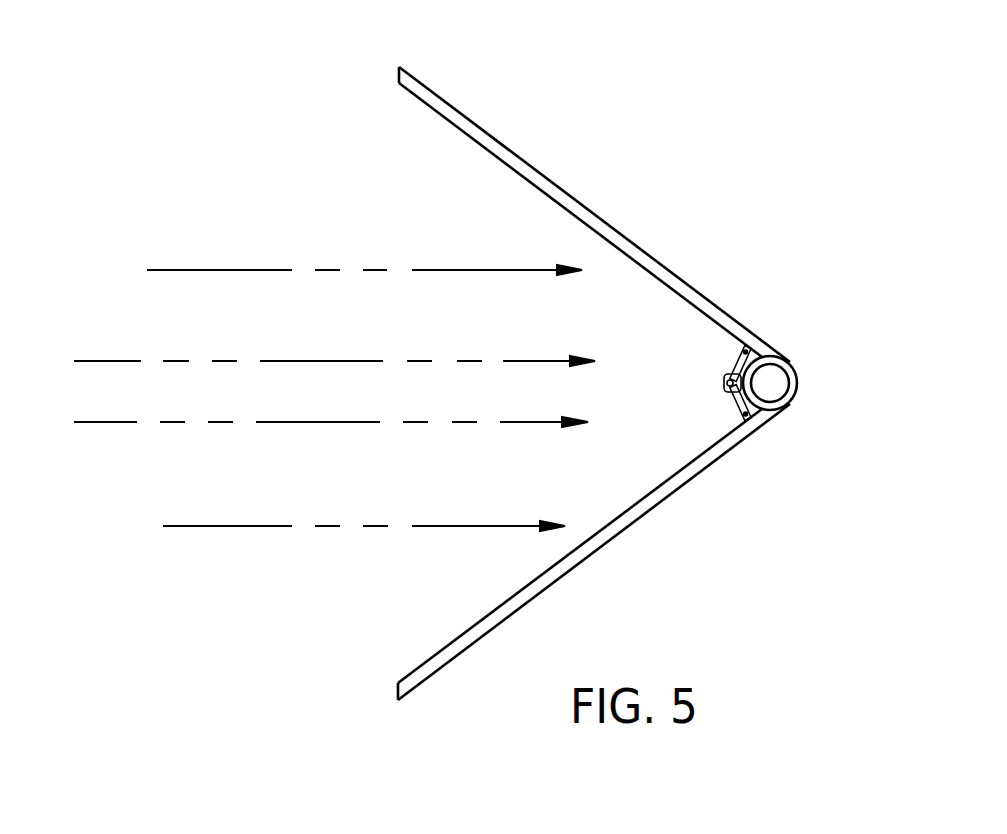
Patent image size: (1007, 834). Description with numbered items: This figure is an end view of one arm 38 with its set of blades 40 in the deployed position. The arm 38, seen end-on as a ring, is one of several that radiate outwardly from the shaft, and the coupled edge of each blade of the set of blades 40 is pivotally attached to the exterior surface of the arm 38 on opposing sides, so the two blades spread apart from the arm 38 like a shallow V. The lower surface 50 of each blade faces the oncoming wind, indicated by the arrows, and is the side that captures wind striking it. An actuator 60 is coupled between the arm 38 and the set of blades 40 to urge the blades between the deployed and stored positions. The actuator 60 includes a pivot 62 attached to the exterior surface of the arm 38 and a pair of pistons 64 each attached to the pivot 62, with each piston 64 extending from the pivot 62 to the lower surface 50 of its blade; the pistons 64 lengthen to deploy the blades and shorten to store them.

The arm 38 is at (798, 382).
The set of blades 40 is at (578, 364).
The lower surface 50 is at (467, 134).
The actuator 60 is at (697, 367).
The pivot 62 is at (724, 383).
The piston 64 is at (733, 366).